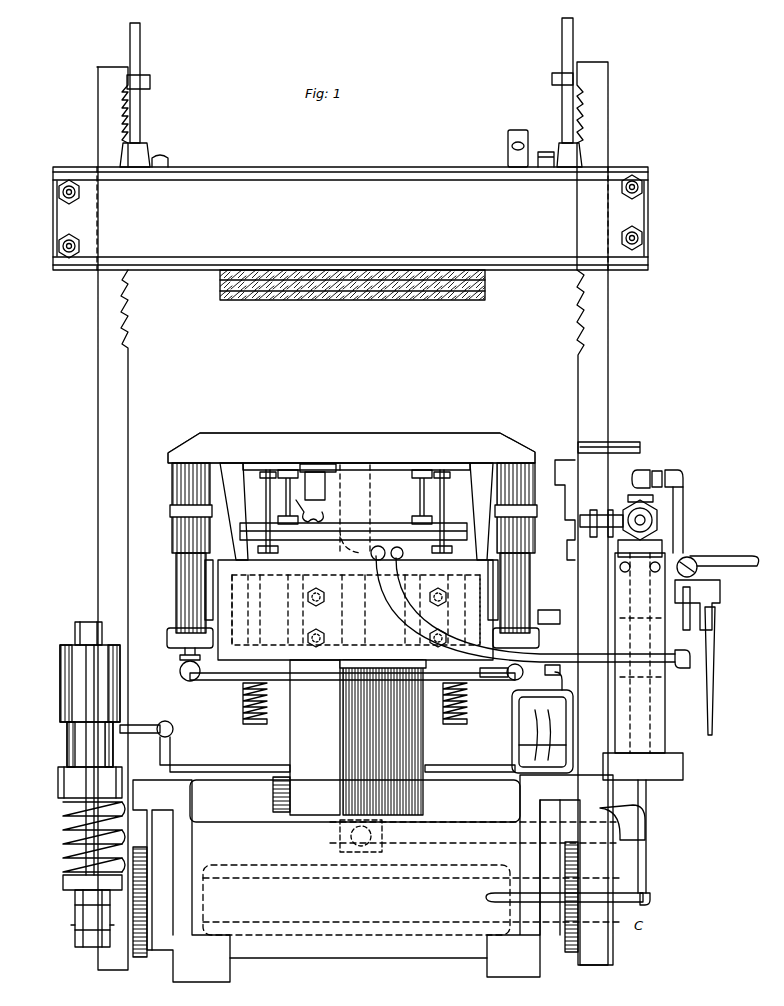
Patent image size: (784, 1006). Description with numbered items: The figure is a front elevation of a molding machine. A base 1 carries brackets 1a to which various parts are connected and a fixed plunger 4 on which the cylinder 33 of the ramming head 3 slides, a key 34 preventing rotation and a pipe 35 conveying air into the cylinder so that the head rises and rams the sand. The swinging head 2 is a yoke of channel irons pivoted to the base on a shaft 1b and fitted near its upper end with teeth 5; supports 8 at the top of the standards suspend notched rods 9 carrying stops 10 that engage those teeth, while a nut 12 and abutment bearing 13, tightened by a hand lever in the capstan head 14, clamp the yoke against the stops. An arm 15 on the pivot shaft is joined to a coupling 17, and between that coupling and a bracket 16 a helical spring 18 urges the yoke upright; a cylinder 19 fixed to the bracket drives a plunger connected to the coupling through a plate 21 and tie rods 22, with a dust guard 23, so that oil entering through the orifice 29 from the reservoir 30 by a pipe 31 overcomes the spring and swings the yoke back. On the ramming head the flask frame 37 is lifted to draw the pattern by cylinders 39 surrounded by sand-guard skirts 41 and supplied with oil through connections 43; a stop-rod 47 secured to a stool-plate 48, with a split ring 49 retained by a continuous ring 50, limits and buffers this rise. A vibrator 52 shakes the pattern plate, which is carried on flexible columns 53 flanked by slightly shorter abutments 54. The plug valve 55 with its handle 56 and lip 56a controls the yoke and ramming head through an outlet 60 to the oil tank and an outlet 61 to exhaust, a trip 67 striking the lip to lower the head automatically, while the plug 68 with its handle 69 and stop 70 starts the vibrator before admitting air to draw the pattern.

The base 1 is at (411, 877).
The brackets 1a is at (143, 820).
The shaft 1b is at (640, 900).
The swinging head 2 is at (623, 222).
The ramming head 3 is at (405, 452).
The plunger 4 is at (290, 740).
The teeth 5 is at (128, 340).
The supports 8 is at (552, 79).
The notched rods 9 is at (140, 30).
The stops 10 is at (140, 152).
The nut 12 is at (166, 160).
The abutment bearing 13 is at (546, 152).
The capstan head 14 is at (516, 130).
The arm 15 is at (310, 462).
The bracket 16 is at (58, 788).
The coupling 17 is at (78, 942).
The helical spring 18 is at (63, 846).
The cylinder 19 is at (67, 740).
The plate 21 is at (80, 624).
The tie rods 22 is at (84, 690).
The dust guard 23 is at (60, 666).
The orifice 29 is at (122, 726).
The reservoir 30 is at (518, 727).
The pipe 31 is at (672, 680).
The cylinder 33 is at (420, 740).
The key 34 is at (273, 794).
The pipe 35 is at (645, 822).
The flask frame 37 is at (482, 450).
The cylinders 39 is at (176, 596).
The skirts 41 is at (371, 511).
The connections 43 is at (188, 681).
The stop-rod 47 is at (250, 678).
The stool-plate 48 is at (376, 529).
The split ring 49 is at (460, 724).
The continuous ring 50 is at (243, 716).
The vibrator 52 is at (317, 462).
The flexible columns 53 is at (266, 494).
The abutments 54 is at (200, 487).
The plug valve 55 is at (683, 503).
The handle 56 is at (638, 442).
The lip 56a is at (562, 460).
The outlet 60 is at (656, 470).
The outlet 61 is at (682, 533).
The trip 67 is at (545, 616).
The plug 68 is at (690, 557).
The handle 69 is at (740, 558).
The stop 70 is at (722, 585).